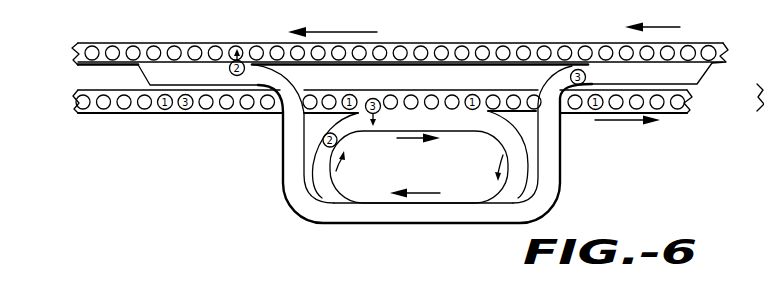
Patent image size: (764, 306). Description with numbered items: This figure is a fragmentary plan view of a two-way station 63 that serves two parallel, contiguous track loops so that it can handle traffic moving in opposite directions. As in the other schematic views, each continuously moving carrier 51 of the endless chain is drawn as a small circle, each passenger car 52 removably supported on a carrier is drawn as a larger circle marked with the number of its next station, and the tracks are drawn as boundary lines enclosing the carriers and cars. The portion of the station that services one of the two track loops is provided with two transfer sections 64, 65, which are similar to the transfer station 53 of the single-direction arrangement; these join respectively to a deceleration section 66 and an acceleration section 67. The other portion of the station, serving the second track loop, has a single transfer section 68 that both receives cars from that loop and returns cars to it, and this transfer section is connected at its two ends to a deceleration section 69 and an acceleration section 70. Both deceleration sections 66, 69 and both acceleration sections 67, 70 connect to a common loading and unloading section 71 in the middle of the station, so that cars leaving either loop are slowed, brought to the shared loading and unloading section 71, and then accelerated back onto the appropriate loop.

The carrier 51 is at (477, 43).
The passenger car 52 is at (692, 33).
The transfer station 53 is at (419, 167).
The two-way station 63 is at (443, 225).
The transfer section 64 is at (617, 72).
The transfer section 65 is at (215, 77).
The deceleration section 66 is at (552, 158).
The acceleration section 67 is at (283, 137).
The single transfer section 68 is at (392, 123).
The deceleration section 69 is at (507, 140).
The acceleration section 70 is at (346, 160).
The loading and unloading section 71 is at (388, 217).